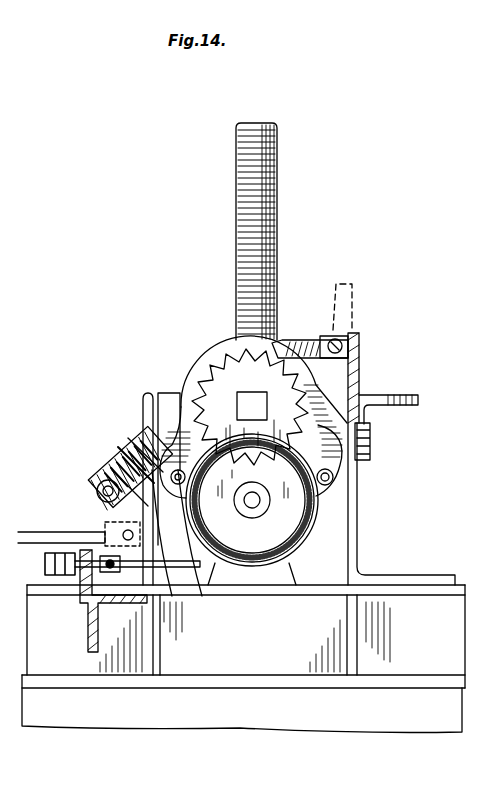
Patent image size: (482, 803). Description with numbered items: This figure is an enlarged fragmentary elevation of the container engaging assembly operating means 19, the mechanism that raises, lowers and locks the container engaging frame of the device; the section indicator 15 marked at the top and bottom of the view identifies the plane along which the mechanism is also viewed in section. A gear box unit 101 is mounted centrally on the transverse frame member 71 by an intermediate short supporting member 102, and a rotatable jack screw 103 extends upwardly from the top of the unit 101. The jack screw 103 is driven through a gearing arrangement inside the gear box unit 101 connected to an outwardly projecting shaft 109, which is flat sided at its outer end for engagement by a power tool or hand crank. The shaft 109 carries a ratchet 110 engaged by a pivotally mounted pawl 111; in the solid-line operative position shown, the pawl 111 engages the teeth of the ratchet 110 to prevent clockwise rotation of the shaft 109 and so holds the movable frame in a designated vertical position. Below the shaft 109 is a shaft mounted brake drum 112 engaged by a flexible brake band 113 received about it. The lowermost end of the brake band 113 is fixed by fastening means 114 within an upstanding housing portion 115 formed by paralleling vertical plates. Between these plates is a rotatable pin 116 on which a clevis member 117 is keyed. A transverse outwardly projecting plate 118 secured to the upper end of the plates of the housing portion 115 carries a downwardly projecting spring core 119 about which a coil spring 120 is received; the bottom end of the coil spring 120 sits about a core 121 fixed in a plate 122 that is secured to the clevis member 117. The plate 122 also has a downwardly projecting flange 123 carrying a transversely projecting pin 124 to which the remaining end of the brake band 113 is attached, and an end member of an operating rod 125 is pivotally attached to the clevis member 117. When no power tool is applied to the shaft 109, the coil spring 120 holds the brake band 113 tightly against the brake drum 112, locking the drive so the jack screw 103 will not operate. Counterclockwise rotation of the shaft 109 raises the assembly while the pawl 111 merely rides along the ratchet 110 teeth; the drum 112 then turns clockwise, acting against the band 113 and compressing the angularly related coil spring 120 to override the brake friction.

The section line 15- 15 is at (268, 89).
The container engaging assembly operating means 19 is at (398, 380).
The transverse frame member 71 is at (403, 703).
The gear box unit 101 is at (351, 470).
The intermediate short supporting member 102 is at (66, 621).
The jack screw 103 is at (279, 228).
The shaft 109 is at (250, 407).
The ratchet 110 is at (224, 348).
The pawl 111 is at (298, 340).
The brake drum 112 is at (290, 508).
The brake band 113 is at (290, 563).
The fastening means 114 is at (70, 542).
The housing portion 115 is at (96, 468).
The rotatable pin 116 is at (97, 490).
The clevis member 117 is at (118, 472).
The transverse outwardly projecting plate 118 is at (116, 446).
The spring core 119 is at (134, 432).
The coil spring 120 is at (162, 420).
The core 121 is at (246, 484).
The plate 122 is at (244, 514).
The flange 123 is at (172, 555).
The pin 124 is at (205, 542).
The operating rod 125 is at (40, 530).